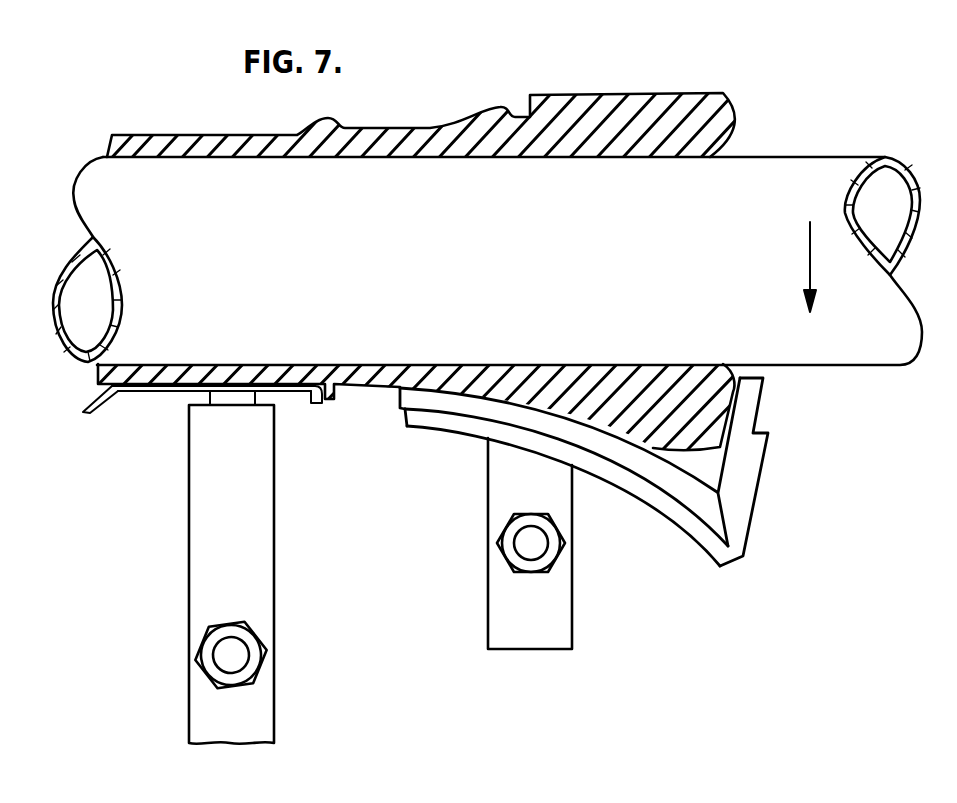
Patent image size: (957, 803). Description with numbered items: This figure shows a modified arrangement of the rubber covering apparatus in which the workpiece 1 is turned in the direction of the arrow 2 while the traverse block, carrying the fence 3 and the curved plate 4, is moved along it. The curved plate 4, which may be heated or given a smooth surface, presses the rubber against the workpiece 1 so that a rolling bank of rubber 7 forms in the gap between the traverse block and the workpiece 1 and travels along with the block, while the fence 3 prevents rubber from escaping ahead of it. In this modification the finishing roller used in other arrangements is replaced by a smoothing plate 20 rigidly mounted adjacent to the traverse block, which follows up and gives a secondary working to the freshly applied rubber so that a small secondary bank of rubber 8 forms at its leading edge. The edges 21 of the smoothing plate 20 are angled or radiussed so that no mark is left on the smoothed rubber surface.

The workpiece 1 is at (858, 347).
The direction of rotation arrow 2 is at (808, 236).
The fence 3 is at (736, 470).
The curved plate 4 is at (650, 470).
The rolling bank of rubber 7 is at (668, 384).
The secondary bank of rubber 8 is at (328, 384).
The smoothing plate 20 is at (148, 392).
The edges of the smoothing plate 21 is at (105, 400).